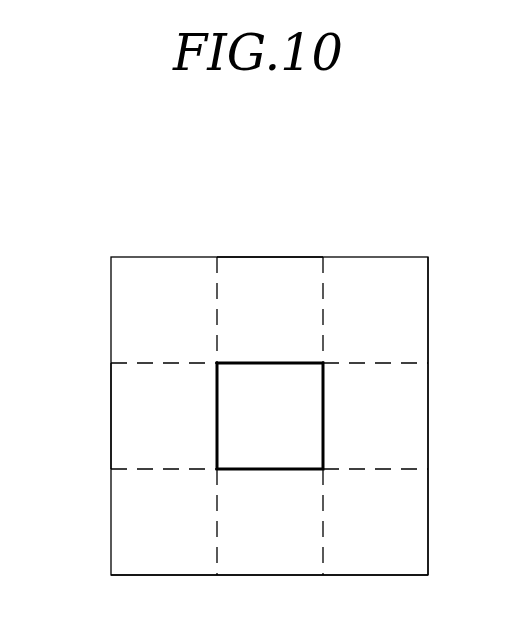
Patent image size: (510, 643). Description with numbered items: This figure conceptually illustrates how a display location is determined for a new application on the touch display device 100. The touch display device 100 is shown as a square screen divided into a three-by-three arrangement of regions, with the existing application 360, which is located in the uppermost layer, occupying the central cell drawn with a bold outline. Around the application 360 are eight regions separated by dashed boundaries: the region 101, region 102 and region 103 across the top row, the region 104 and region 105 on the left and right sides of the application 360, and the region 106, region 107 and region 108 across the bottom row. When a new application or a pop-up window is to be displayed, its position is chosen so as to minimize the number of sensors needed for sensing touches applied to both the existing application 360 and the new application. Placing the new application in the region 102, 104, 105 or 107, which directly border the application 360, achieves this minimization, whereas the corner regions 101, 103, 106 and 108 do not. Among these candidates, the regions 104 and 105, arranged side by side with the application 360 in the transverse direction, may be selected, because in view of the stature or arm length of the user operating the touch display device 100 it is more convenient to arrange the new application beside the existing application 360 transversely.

The touch display device 100 is at (208, 220).
The region 101 is at (164, 310).
The region 102 is at (270, 310).
The region 103 is at (375, 310).
The region 104 is at (164, 416).
The region 105 is at (375, 416).
The region 106 is at (164, 522).
The region 107 is at (270, 522).
The region 108 is at (375, 522).
The application 360 is at (270, 416).